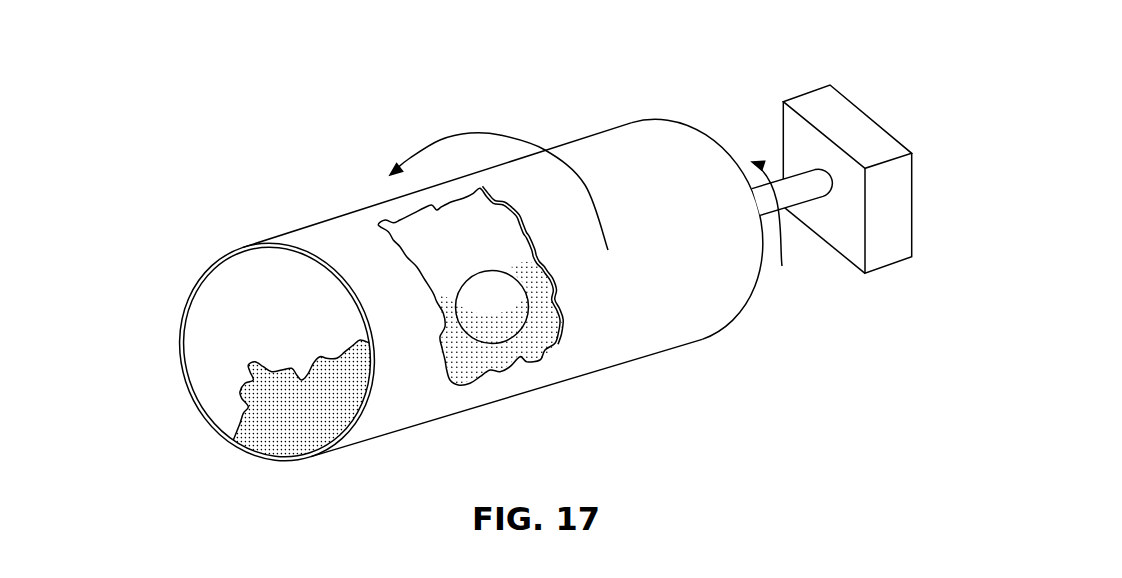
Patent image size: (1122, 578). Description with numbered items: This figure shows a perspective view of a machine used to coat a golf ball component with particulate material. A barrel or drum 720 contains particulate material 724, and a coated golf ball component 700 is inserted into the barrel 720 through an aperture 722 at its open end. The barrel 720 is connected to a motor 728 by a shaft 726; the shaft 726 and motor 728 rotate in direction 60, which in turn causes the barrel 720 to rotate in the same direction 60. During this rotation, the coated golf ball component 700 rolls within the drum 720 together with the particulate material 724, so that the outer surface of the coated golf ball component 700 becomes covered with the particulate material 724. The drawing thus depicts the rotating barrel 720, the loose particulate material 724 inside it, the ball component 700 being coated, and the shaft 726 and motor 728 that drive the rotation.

The direction 60 is at (487, 134).
The coated golf ball component 700 is at (488, 323).
The barrel 720 is at (322, 235).
The aperture 722 is at (229, 342).
The particulate material 724 is at (519, 357).
The shaft 726 is at (800, 182).
The motor 728 is at (857, 127).